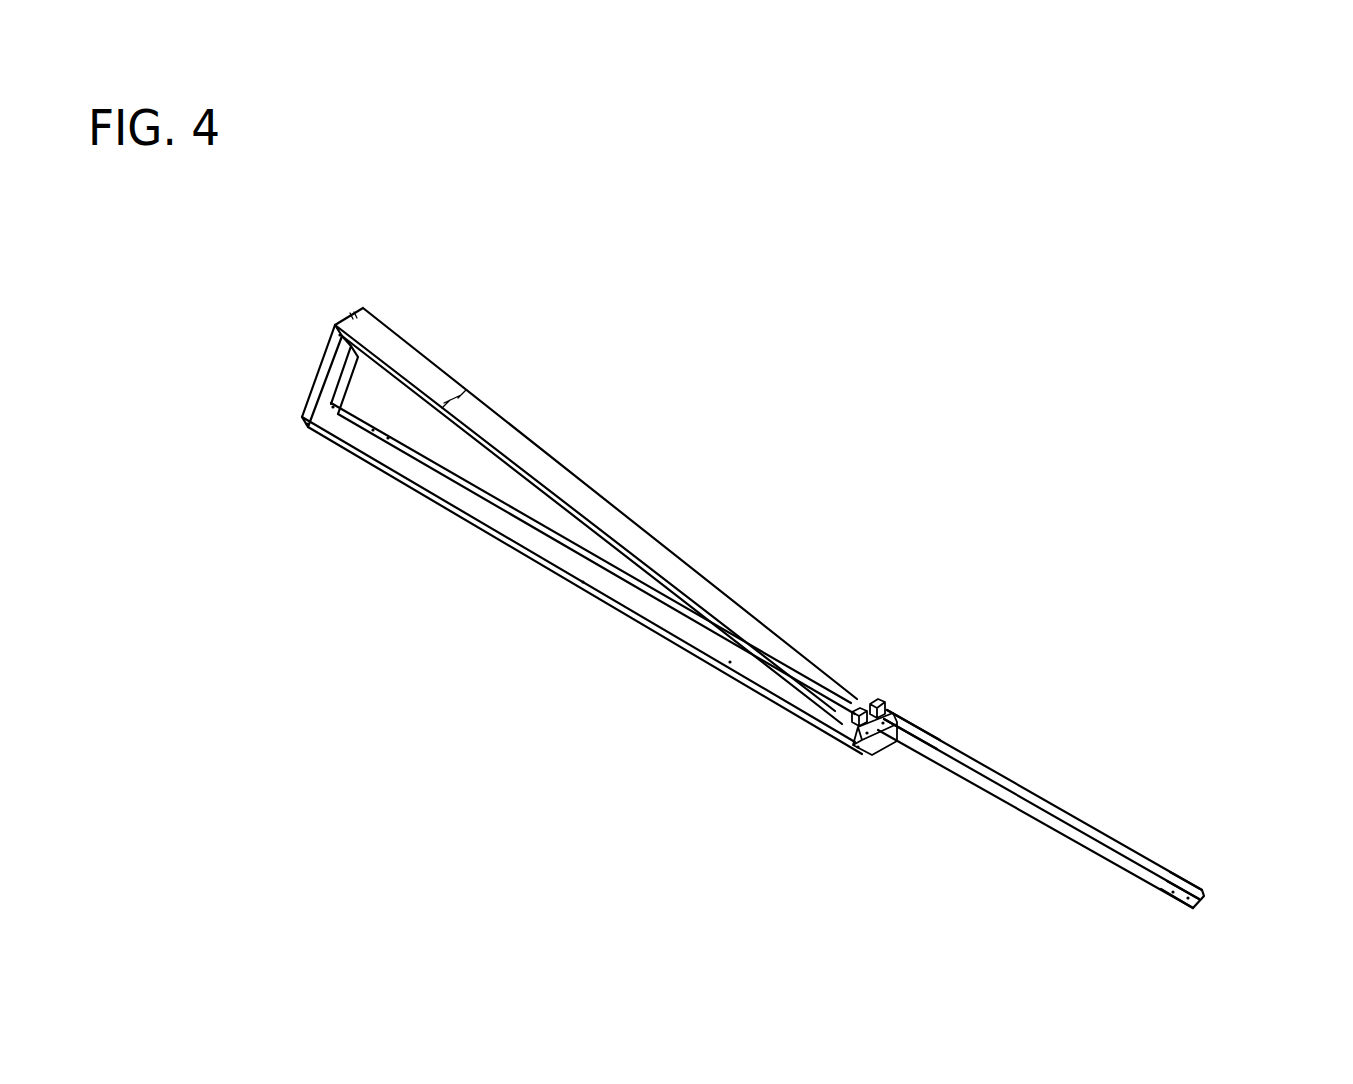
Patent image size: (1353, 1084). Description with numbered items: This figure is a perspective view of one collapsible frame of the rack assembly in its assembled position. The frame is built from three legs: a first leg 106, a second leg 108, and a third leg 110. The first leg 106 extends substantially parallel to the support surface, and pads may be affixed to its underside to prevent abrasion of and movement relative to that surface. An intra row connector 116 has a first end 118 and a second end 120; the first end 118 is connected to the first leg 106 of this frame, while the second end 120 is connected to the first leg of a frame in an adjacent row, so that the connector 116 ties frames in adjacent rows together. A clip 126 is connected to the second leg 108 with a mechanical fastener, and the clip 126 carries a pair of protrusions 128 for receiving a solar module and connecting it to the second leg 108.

The first leg 106 is at (642, 617).
The second leg 108 is at (722, 602).
The third leg 110 is at (322, 372).
The intra row connector 116 is at (1055, 797).
The first end 118 is at (900, 716).
The second end 120 is at (1212, 898).
The clip 126 is at (876, 752).
The protrusions 128 is at (856, 706).